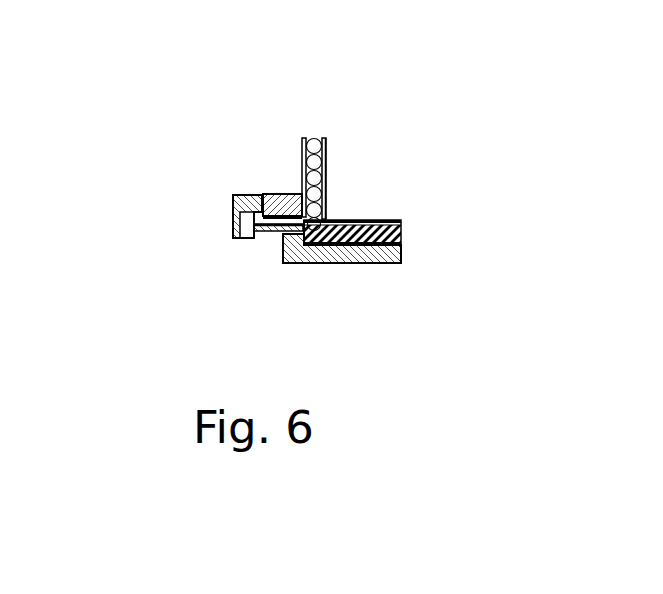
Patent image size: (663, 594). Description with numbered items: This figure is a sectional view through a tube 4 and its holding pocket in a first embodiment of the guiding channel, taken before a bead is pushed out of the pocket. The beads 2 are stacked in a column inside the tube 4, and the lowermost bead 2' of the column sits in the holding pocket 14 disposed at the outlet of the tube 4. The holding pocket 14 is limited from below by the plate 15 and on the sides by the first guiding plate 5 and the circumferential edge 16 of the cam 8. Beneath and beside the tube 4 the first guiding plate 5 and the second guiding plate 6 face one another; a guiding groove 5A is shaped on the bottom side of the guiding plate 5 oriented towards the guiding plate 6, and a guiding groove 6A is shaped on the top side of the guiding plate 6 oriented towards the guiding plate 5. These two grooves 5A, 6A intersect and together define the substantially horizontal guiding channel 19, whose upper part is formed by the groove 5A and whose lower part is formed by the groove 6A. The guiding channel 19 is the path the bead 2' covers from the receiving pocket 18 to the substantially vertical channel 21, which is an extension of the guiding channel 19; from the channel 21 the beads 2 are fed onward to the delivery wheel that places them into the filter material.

The tube 4 is at (304, 139).
The beads 2 is at (343, 125).
The lowermost bead 2' is at (366, 151).
The first guiding plate 5 is at (288, 197).
The guiding groove 5A is at (263, 195).
The second guiding plate 6 is at (233, 198).
The channel 21 is at (254, 229).
The guiding groove 6A is at (263, 232).
The cam 8 is at (400, 220).
The circumferential edge 16 is at (326, 218).
The plate 15 is at (401, 237).
The holding pocket 14 is at (335, 247).
The guiding channel 19 is at (283, 237).
The receiving pocket 18 is at (301, 245).